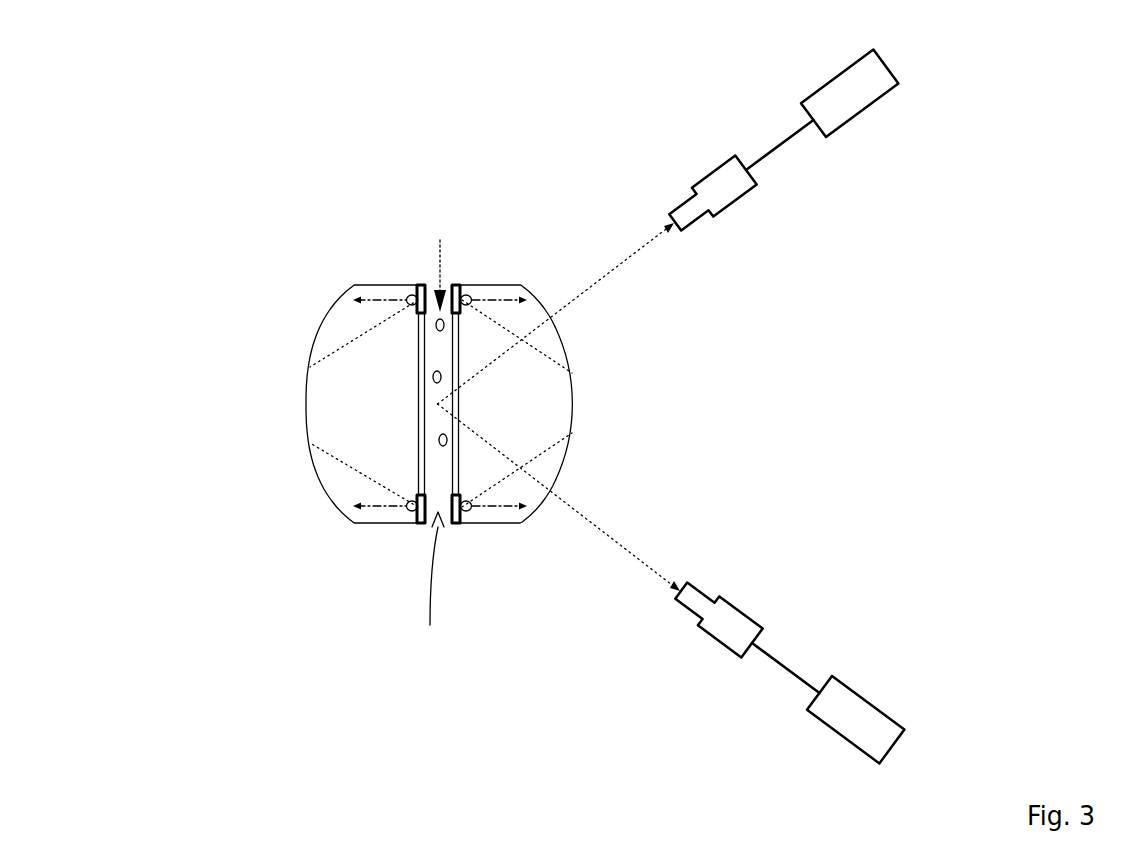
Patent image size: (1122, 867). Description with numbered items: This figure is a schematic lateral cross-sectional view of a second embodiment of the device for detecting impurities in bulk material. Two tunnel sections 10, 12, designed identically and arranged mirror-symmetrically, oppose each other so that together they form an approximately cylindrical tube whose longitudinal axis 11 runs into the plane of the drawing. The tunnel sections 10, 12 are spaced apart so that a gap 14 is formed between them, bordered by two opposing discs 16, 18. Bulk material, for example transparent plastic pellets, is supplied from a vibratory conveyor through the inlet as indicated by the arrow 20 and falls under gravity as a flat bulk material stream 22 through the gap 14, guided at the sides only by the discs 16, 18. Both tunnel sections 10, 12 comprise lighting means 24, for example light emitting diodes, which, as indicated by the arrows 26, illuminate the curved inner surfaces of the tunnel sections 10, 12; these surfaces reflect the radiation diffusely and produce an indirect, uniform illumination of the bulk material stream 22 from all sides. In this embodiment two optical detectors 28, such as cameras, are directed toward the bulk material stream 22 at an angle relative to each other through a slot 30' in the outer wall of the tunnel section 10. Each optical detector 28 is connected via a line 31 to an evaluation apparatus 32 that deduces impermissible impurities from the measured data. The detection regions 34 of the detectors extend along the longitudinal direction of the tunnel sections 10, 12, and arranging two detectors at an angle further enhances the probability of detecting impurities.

The tunnel section 10 is at (445, 424).
The longitudinal axis 11 is at (434, 406).
The tunnel section 12 is at (360, 295).
The gap 14 is at (431, 581).
The disc 16 is at (455, 350).
The disc 18 is at (420, 347).
The arrow 20 is at (437, 258).
The bulk material stream 22 is at (437, 378).
The lighting means 24 is at (417, 285).
The arrows 26 is at (350, 462).
The optical detector 28 is at (722, 184).
The slot 30' is at (600, 391).
The line 31 is at (773, 148).
The evaluation apparatus 32 is at (852, 90).
The detection region 34 is at (615, 268).